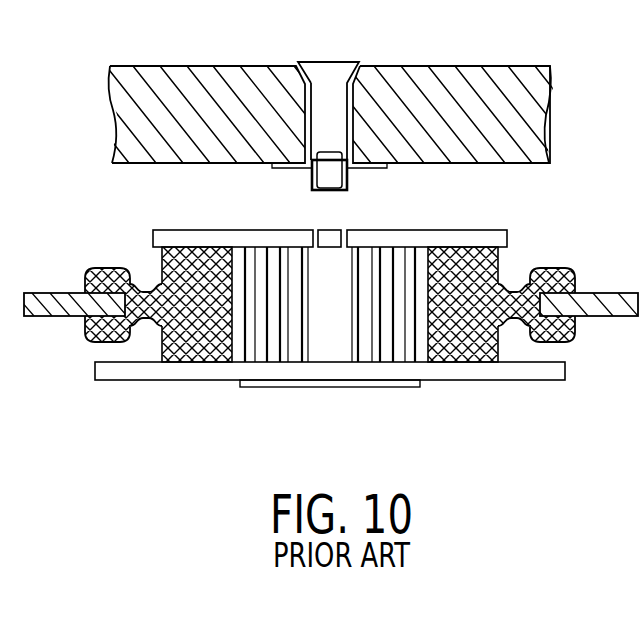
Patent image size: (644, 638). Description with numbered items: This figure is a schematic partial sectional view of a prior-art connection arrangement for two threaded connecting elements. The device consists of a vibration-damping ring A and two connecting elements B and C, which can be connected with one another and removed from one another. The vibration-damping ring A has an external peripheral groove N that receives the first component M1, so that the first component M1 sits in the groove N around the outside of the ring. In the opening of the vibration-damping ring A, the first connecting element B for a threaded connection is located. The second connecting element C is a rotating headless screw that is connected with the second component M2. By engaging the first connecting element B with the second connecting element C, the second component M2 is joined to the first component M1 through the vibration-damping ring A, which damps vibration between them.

The vibration-damping ring A is at (449, 336).
The first connecting element B is at (365, 255).
The second connecting element C is at (342, 68).
The external peripheral groove N is at (88, 342).
The first component M1 is at (580, 302).
The second component M2 is at (532, 103).